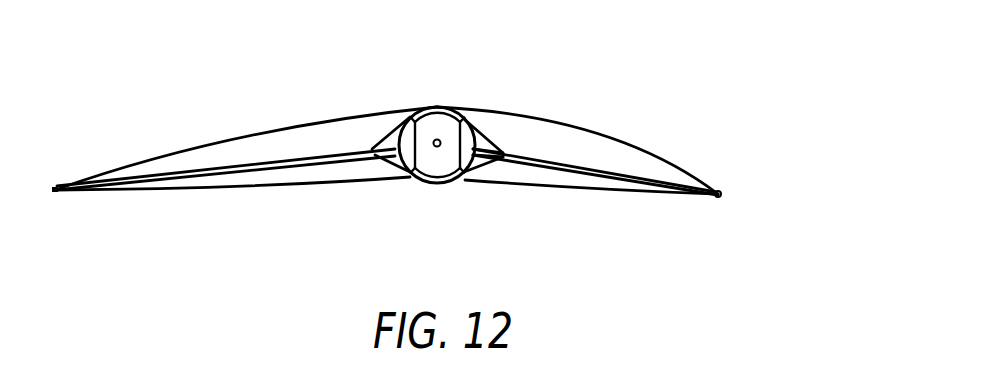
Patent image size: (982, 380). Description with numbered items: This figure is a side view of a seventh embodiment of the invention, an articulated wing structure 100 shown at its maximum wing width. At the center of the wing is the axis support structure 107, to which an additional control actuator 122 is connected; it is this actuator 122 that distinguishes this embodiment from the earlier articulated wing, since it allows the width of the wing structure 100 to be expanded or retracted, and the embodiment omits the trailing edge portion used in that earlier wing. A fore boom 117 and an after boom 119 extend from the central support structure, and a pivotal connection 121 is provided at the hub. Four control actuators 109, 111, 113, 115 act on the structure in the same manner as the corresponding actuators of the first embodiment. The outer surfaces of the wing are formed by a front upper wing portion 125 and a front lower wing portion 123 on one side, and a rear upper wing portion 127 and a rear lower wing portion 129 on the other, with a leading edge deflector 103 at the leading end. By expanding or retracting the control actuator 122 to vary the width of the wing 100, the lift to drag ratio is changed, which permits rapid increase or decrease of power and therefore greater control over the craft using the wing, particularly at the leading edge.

The articulated wing structure 100 is at (674, 100).
The leading edge deflector 103 is at (725, 193).
The axis support structure 107 is at (477, 180).
The control actuator 109 is at (480, 158).
The control actuator 111 is at (372, 180).
The control actuator 113 is at (500, 125).
The control actuator 115 is at (378, 143).
The fore boom 117 is at (580, 163).
The after boom 119 is at (187, 171).
The pivotal connection 121 is at (436, 147).
The control actuator 122 is at (435, 125).
The front lower wing portion 123 is at (612, 191).
The front upper wing portion 125 is at (677, 163).
The rear upper wing portion 127 is at (297, 123).
The rear lower wing portion 129 is at (203, 187).